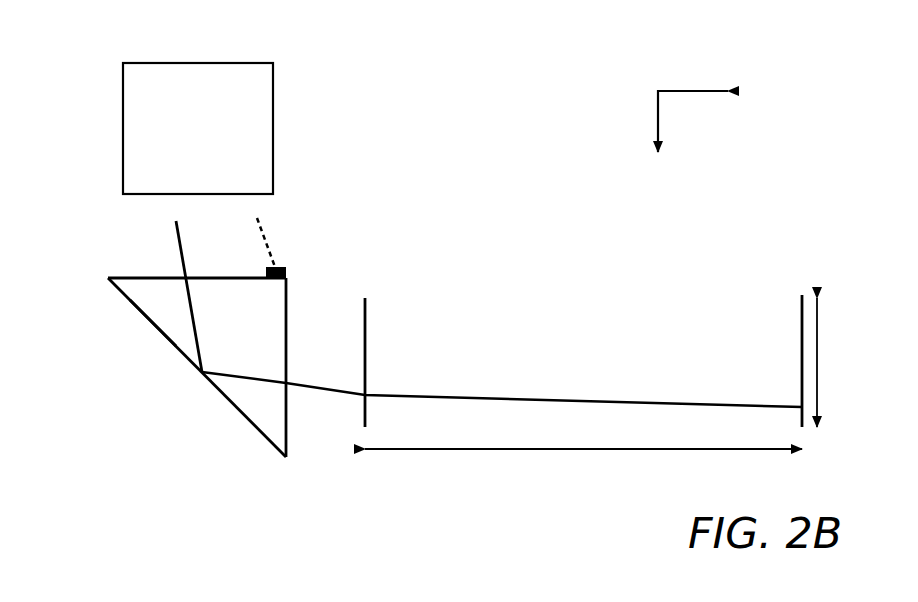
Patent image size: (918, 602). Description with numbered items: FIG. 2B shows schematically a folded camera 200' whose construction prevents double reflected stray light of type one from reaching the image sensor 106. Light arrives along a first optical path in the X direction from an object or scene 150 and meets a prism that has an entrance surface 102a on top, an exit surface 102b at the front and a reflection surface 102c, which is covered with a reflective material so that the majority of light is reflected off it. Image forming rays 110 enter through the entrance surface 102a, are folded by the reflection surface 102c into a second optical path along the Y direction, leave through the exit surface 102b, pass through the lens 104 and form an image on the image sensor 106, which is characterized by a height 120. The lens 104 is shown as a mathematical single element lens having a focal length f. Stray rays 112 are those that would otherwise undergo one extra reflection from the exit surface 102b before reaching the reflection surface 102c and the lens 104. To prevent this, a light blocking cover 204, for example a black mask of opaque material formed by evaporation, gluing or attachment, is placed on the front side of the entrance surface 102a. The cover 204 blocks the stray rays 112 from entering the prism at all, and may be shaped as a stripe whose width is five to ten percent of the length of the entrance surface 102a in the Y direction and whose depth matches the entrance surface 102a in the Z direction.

The folded camera 200' is at (460, 267).
The object or scene 150 is at (177, 177).
The image forming rays 110 is at (176, 230).
The stray rays 112 is at (263, 235).
The entrance surface 102a is at (127, 277).
The exit surface 102b is at (287, 435).
The reflection surface 102c is at (238, 412).
The light blocking cover 204 is at (287, 275).
The lens 104 is at (367, 362).
The image sensor 106 is at (805, 295).
The height 120 is at (817, 348).